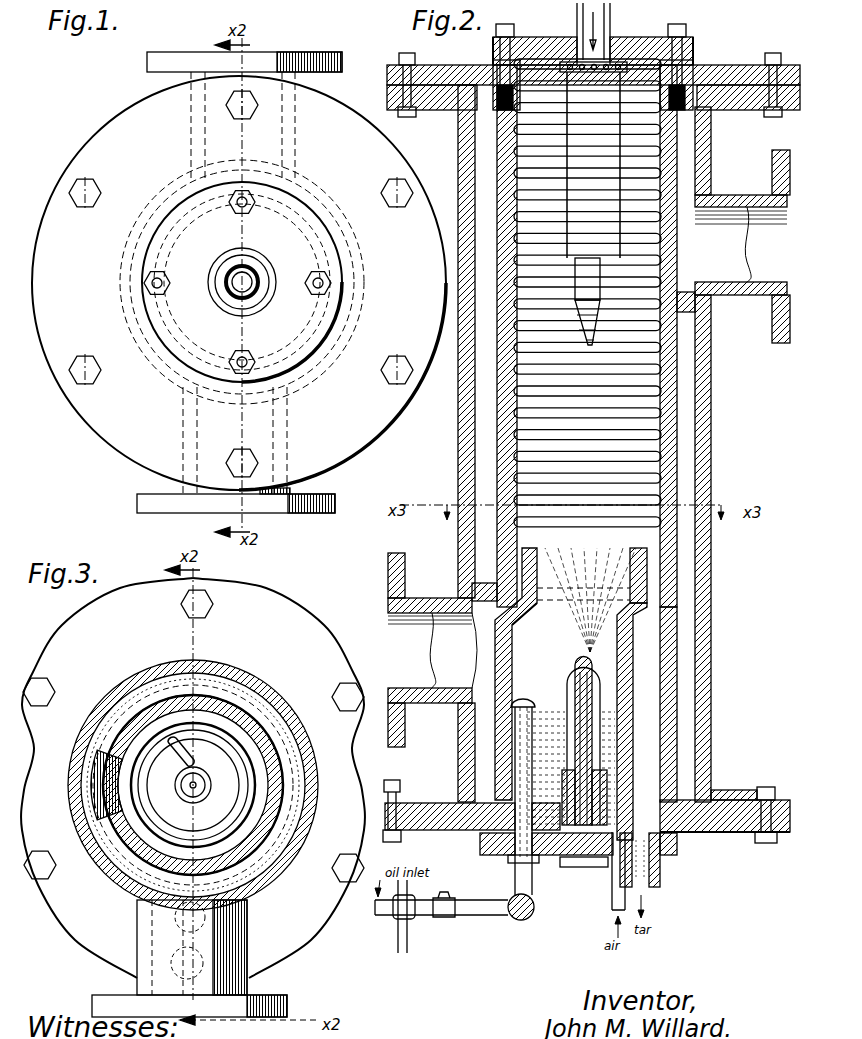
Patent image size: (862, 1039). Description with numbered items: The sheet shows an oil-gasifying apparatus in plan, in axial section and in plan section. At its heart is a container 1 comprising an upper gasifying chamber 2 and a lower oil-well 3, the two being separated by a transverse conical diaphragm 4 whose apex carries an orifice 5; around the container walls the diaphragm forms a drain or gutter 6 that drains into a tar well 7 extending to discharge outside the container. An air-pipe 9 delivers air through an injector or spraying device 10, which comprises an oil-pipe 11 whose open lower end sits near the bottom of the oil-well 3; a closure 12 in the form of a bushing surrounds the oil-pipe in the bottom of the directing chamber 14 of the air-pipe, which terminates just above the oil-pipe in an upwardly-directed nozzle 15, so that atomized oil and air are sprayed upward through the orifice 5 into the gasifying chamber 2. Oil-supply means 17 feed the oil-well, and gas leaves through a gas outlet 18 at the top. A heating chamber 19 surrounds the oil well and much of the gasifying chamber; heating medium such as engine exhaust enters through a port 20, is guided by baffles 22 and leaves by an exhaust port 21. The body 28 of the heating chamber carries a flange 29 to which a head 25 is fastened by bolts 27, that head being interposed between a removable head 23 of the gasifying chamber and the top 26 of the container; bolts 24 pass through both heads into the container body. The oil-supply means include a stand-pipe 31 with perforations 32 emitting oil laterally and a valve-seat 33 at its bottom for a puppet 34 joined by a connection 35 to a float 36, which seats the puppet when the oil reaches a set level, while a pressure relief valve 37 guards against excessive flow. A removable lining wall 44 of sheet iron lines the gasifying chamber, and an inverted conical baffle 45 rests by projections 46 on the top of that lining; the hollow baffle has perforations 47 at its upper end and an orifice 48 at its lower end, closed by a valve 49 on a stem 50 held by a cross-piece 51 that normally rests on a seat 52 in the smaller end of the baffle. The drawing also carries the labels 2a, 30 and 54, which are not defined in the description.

In FIG. 1, the container 1 is at (296, 240).
In FIG. 2, the container 1 is at (495, 458).
In FIG. 3, the container 1 is at (278, 832).
In FIG. 2, the gasifying chamber 2 is at (587, 385).
In FIG. 1, the inner bolts 2a is at (232, 207).
In FIG. 2, the oil-well 3 is at (606, 680).
In FIG. 2, the transverse conical diaphragm 4 is at (515, 626).
In FIG. 2, the orifice 5 is at (571, 674).
In FIG. 3, the orifice 5 is at (222, 755).
In FIG. 2, the drain or gutter 6 is at (513, 580).
In FIG. 2, the tar well 7 is at (645, 672).
In FIG. 2, the air-pipe 9 is at (611, 905).
In FIG. 3, the air-pipe 9 is at (178, 768).
In FIG. 2, the injector or spraying device 10 is at (614, 700).
In FIG. 2, the oil-pipe 11 is at (633, 738).
In FIG. 2, the closure 12 is at (584, 868).
In FIG. 2, the directing chamber 14 is at (575, 700).
In FIG. 3, the directing chamber 14 is at (193, 798).
In FIG. 2, the nozzle 15 is at (584, 657).
In FIG. 3, the nozzle 15 is at (212, 785).
In FIG. 2, the oil-supply means 17 is at (535, 890).
In FIG. 3, the oil-supply means 17 is at (137, 936).
In FIG. 1, the gas outlet 18 is at (228, 292).
In FIG. 2, the gas outlet 18 is at (612, 30).
In FIG. 2, the heating chamber 19 is at (688, 400).
In FIG. 3, the heating chamber 19 is at (320, 790).
In FIG. 1, the port 20 is at (215, 52).
In FIG. 2, the port 20 is at (742, 246).
In FIG. 1, the exhaust port 21 is at (290, 513).
In FIG. 2, the exhaust port 21 is at (401, 650).
In FIG. 2, the baffles 22 is at (716, 318).
In FIG. 3, the baffles 22 is at (112, 742).
In FIG. 1, the removable head 23 is at (150, 310).
In FIG. 2, the removable head 23 is at (694, 55).
In FIG. 2, the bolts 24 is at (690, 40).
In FIG. 1, the head for the heating chamber 25 is at (239, 283).
In FIG. 2, the head for the heating chamber 25 is at (455, 65).
In FIG. 2, the top of the container 26 is at (497, 112).
In FIG. 1, the bolts 27 is at (228, 110).
In FIG. 2, the bolts 27 is at (407, 53).
In FIG. 2, the body of the heating chamber 28 is at (460, 432).
In FIG. 2, the flange 29 is at (440, 110).
In FIG. 2, the tar outlet 30 is at (661, 878).
In FIG. 3, the tar outlet 30 is at (218, 673).
In FIG. 2, the stand-pipe 31 is at (515, 780).
In FIG. 2, the perforations 32 is at (515, 742).
In FIG. 2, the valve-seat 33 is at (534, 911).
In FIG. 2, the puppet 34 is at (518, 920).
In FIG. 2, the connection 35 is at (580, 870).
In FIG. 2, the float 36 is at (478, 688).
In FIG. 3, the pressure relief valve 37 is at (262, 928).
In FIG. 2, the removable lining wall 44 is at (640, 293).
In FIG. 3, the removable lining wall 44 is at (105, 803).
In FIG. 2, the inverted conical baffle 45 is at (593, 195).
In FIG. 2, the projections 46 is at (540, 62).
In FIG. 2, the perforations 47 is at (593, 126).
In FIG. 2, the orifice 48 is at (582, 336).
In FIG. 2, the valve 49 is at (587, 352).
In FIG. 2, the stem 50 is at (600, 330).
In FIG. 2, the cross-piece 51 is at (576, 322).
In FIG. 2, the seat 52 is at (598, 350).
In FIG. 2, the valve 54 is at (443, 918).